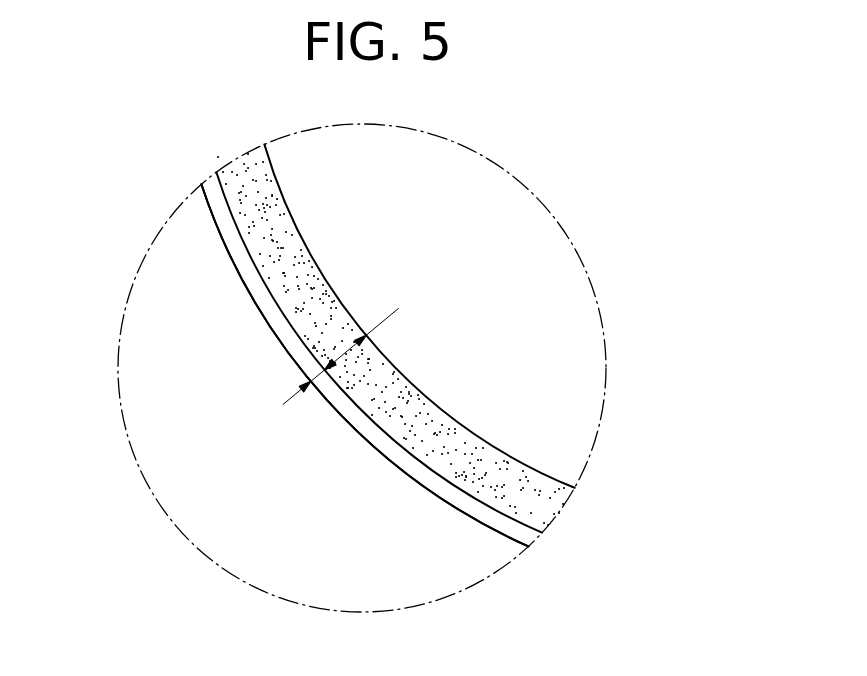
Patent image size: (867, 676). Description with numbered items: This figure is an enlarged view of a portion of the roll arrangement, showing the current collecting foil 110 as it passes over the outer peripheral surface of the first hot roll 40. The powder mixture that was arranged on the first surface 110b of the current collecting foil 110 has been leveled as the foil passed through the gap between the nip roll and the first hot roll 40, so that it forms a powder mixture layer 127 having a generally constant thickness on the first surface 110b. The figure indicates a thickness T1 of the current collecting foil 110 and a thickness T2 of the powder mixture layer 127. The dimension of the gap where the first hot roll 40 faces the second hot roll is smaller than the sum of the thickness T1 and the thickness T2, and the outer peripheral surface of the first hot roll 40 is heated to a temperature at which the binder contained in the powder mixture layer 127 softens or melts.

The first hot roll 40 is at (484, 290).
The current collecting foil 110 is at (447, 502).
The first surface 110b is at (447, 502).
The powder mixture layer 127 is at (520, 497).
The thickness of the current collecting foil T1 is at (318, 376).
The thickness of the powder mixture layer T2 is at (346, 353).